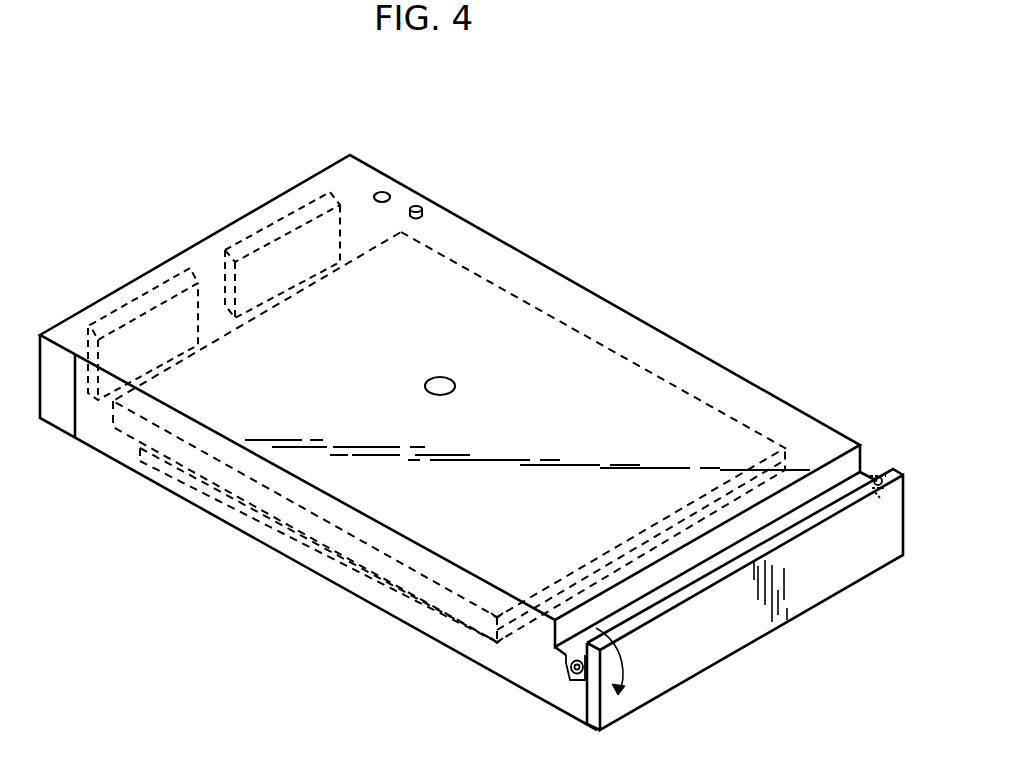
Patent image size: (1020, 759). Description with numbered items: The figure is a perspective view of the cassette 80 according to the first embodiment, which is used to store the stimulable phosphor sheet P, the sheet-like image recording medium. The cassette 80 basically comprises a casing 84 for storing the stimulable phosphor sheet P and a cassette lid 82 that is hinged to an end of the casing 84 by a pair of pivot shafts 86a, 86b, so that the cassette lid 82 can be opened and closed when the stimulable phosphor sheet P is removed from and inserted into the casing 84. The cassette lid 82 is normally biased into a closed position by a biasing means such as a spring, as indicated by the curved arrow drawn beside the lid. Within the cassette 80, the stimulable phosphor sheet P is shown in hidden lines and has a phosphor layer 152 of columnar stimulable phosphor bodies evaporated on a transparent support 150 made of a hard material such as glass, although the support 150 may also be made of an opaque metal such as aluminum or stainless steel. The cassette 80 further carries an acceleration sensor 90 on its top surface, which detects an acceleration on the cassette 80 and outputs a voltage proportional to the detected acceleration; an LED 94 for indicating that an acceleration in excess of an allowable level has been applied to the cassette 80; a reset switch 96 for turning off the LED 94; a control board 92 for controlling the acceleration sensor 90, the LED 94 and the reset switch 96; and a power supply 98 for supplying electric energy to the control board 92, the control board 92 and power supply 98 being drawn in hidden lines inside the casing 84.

The cassette 80 is at (560, 246).
The cassette lid 82 is at (677, 667).
The casing 84 is at (272, 535).
The pivot shaft 86a is at (572, 676).
The pivot shaft 86b is at (878, 476).
The acceleration sensor 90 is at (427, 389).
The control board 92 is at (263, 217).
The LED 94 is at (384, 192).
The reset switch 96 is at (419, 206).
The power supply 98 is at (130, 297).
The transparent support 150 is at (142, 448).
The phosphor layer 152 is at (192, 470).
The stimulable phosphor sheet P is at (352, 568).